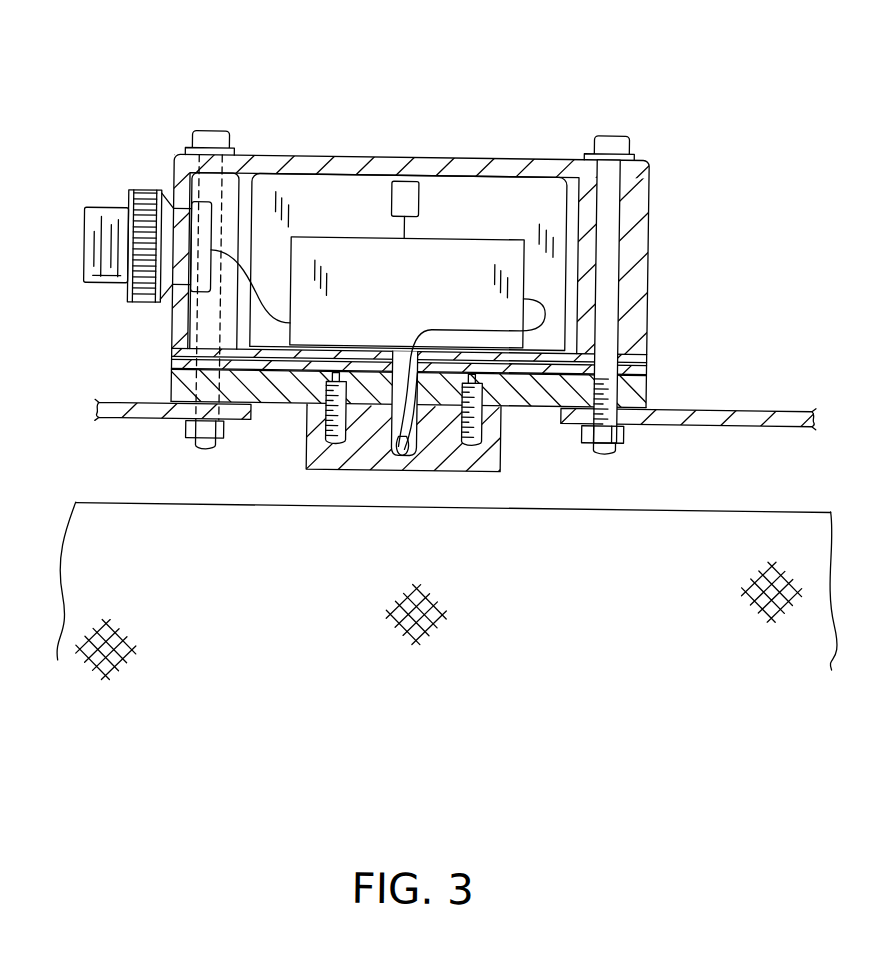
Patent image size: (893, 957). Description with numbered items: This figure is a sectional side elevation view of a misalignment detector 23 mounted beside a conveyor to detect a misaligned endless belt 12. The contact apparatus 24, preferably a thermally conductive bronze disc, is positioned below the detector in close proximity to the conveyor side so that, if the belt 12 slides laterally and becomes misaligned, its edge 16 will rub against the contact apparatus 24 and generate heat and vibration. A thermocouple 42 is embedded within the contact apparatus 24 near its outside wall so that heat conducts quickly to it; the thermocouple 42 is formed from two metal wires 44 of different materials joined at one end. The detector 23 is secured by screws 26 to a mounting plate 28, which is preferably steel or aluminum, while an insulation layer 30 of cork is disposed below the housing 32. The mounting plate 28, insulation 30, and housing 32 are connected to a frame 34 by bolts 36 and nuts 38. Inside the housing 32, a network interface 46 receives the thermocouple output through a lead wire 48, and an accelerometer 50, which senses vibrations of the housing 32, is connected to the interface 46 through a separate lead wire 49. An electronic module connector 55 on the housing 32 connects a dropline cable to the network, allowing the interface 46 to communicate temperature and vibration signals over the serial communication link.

The endless belt 12 is at (123, 522).
The belt edge 16 is at (752, 508).
The misalignment detector 23 is at (405, 136).
The contact apparatus 24 is at (355, 472).
The screws 26 is at (327, 435).
The mounting plate 28 is at (172, 388).
The insulation layer 30 is at (647, 370).
The housing 32 is at (513, 158).
The frame 34 is at (752, 408).
The bolts 36 is at (210, 134).
The nuts 38 is at (187, 427).
The thermocouple 42 is at (397, 458).
The metal wires 44 is at (418, 432).
The network interface 46 is at (512, 233).
The lead wire 48 is at (452, 330).
The lead wire 49 is at (405, 227).
The accelerometer 50 is at (390, 201).
The electronic module connector 55 is at (83, 225).